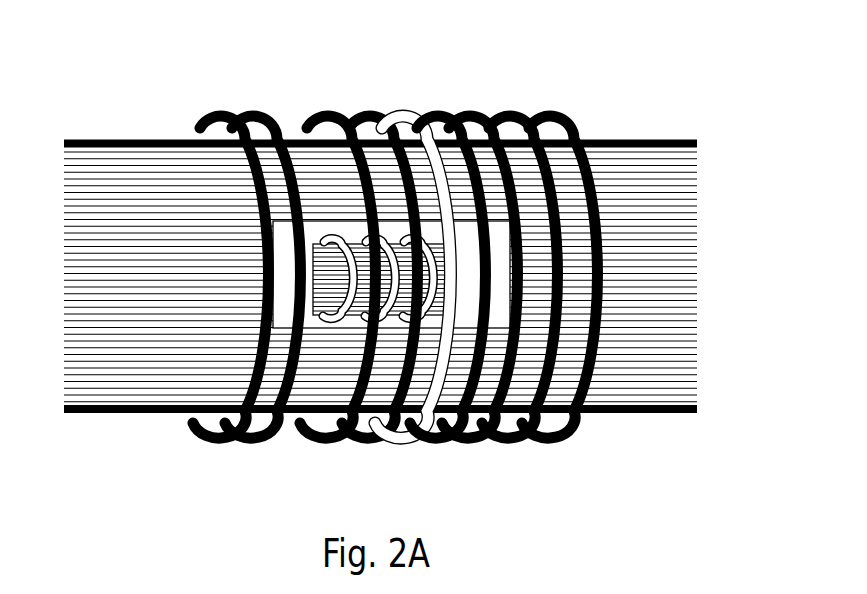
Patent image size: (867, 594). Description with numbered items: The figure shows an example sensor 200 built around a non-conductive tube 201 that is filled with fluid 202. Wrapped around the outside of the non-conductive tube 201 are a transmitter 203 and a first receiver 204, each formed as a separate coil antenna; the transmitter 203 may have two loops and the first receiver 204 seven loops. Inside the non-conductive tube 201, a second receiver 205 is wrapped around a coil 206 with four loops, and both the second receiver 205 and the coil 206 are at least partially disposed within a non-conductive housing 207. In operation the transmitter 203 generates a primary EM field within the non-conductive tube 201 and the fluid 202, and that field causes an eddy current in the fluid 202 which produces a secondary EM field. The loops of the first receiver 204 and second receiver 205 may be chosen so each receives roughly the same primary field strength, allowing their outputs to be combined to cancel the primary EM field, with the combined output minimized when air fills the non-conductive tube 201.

The sensor 200 is at (612, 112).
The non-conductive tube 201 is at (670, 414).
The fluid 202 is at (670, 278).
The transmitter 203 is at (205, 118).
The first receiver 204 is at (408, 117).
The second receiver 205 is at (337, 318).
The coil 206 is at (383, 275).
The non-conductive housing 207 is at (332, 238).